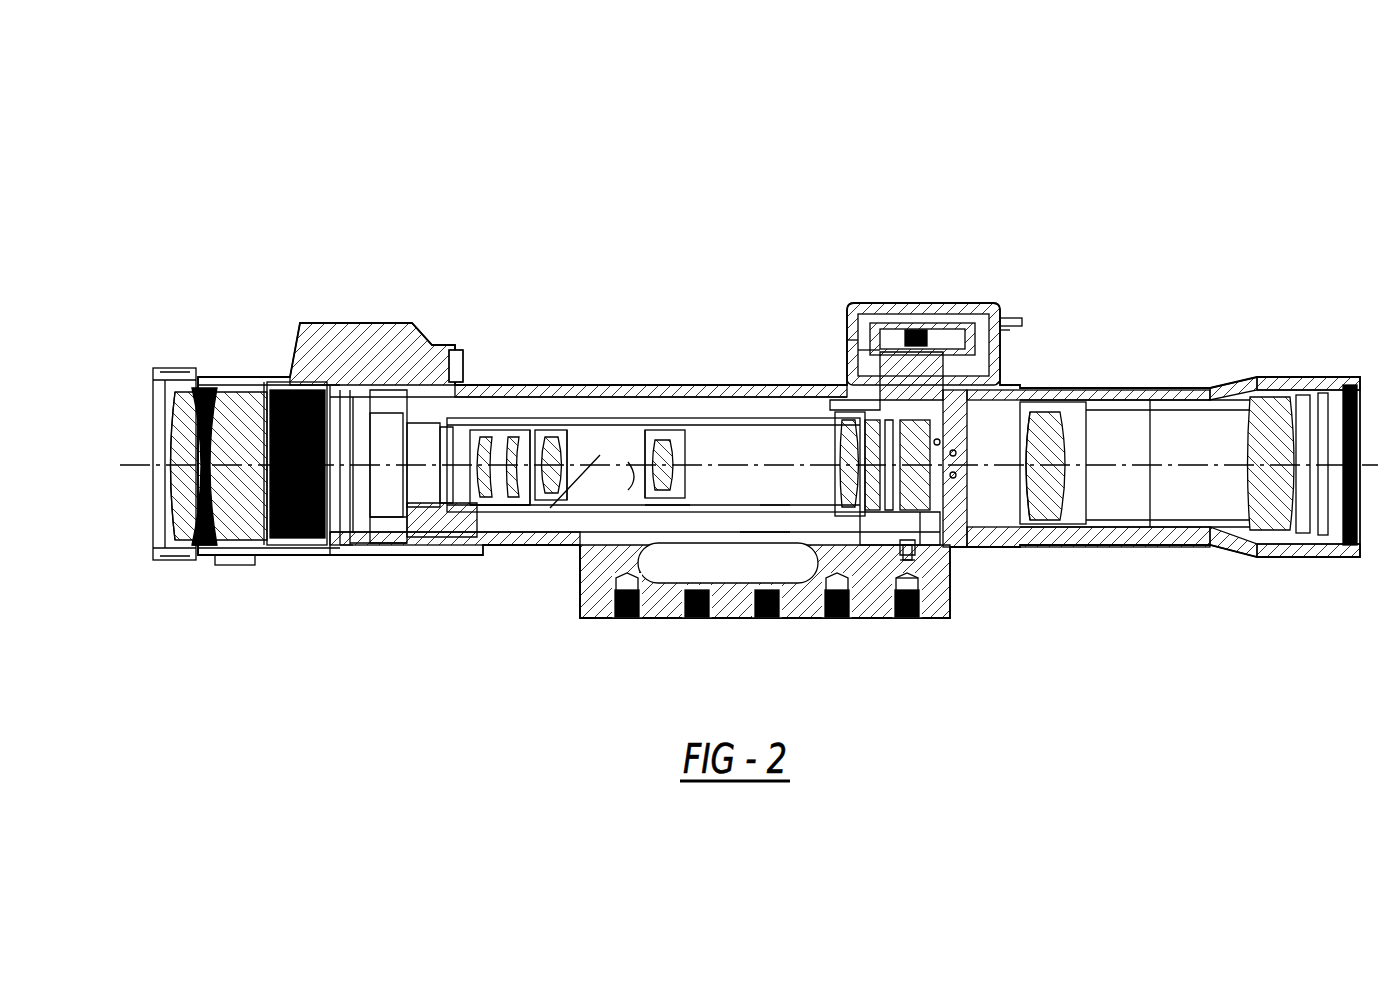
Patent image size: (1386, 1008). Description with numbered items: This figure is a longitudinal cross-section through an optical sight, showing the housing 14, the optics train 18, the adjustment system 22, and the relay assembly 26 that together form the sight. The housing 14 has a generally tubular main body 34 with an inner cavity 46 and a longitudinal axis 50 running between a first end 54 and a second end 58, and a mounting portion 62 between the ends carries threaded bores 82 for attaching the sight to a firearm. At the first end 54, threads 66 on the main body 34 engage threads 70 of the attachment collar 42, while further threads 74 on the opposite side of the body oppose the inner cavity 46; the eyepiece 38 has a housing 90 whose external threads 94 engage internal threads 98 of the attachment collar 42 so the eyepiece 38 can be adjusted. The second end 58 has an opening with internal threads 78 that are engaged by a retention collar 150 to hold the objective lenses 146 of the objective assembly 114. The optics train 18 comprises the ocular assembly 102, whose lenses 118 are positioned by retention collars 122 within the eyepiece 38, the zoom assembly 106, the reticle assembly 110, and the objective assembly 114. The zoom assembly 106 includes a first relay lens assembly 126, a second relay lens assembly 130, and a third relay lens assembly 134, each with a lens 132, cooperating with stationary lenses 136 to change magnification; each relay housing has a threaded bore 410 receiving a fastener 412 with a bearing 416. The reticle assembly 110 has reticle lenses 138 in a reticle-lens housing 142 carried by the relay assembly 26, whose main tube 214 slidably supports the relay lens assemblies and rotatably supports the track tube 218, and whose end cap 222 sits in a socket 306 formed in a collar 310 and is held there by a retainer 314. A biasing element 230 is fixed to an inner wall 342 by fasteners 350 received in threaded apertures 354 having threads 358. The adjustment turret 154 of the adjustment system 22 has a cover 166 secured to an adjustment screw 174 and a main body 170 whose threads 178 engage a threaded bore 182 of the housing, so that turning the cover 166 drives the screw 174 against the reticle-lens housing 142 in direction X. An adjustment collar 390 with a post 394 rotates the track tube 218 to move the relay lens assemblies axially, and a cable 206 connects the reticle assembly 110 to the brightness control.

The housing 14 is at (757, 380).
The optics train 18 is at (200, 381).
The adjustment system 22 is at (996, 210).
The relay assembly 26 is at (565, 545).
The main body 34 is at (575, 445).
The eyepiece 38 is at (183, 367).
The attachment collar 42 is at (300, 380).
The inner cavity 46 is at (1000, 411).
The longitudinal axis 50 is at (1373, 466).
The first end 54 is at (383, 385).
The second end 58 is at (1362, 378).
The mounting portion 62 is at (590, 610).
The threads 66 is at (405, 393).
The threads 70 is at (373, 550).
The threads 74 is at (422, 395).
The internal threads 78 is at (1305, 390).
The threaded bores 82 is at (622, 620).
The housing 90 is at (238, 494).
The external threads 94 is at (280, 378).
The internal threads 98 is at (298, 542).
The ocular assembly 102 is at (203, 560).
The zoom assembly 106 is at (604, 560).
The reticle assembly 110 is at (915, 488).
The objective assembly 114 is at (1180, 534).
The lenses 118 is at (182, 523).
The retention collars 122 is at (308, 382).
The first relay lens assembly 126 is at (515, 425).
The second relay lens assembly 130 is at (663, 425).
The lens 132 is at (656, 436).
The third relay lens assembly 134 is at (585, 443).
The stationary lenses 136 is at (505, 433).
The reticle lenses 138 is at (945, 545).
The reticle-lens housing 142 is at (846, 403).
The objective lenses 146 is at (1054, 436).
The retention collar 150 is at (1065, 525).
The adjustment turret 154 is at (865, 315).
The cover 166 is at (912, 303).
The main body 170 is at (856, 370).
The adjustment screw 174 is at (935, 352).
The threads 178 is at (850, 340).
The threaded bore 182 is at (990, 362).
The cable 206 is at (1000, 520).
The main tube 214 is at (763, 512).
The track tube 218 is at (697, 617).
The end cap 222 is at (398, 545).
The biasing element 230 is at (927, 548).
The socket 306 is at (412, 520).
The collar 310 is at (455, 365).
The retainer 314 is at (345, 540).
The inner wall 342 is at (925, 545).
The fasteners 350 is at (900, 588).
The apertures 354 is at (892, 566).
The threads 358 is at (903, 547).
The adjustment collar 390 is at (350, 375).
The post 394 is at (478, 392).
The threaded bore 410 is at (680, 505).
The fastener 412 is at (657, 517).
The bearing 416 is at (463, 640).